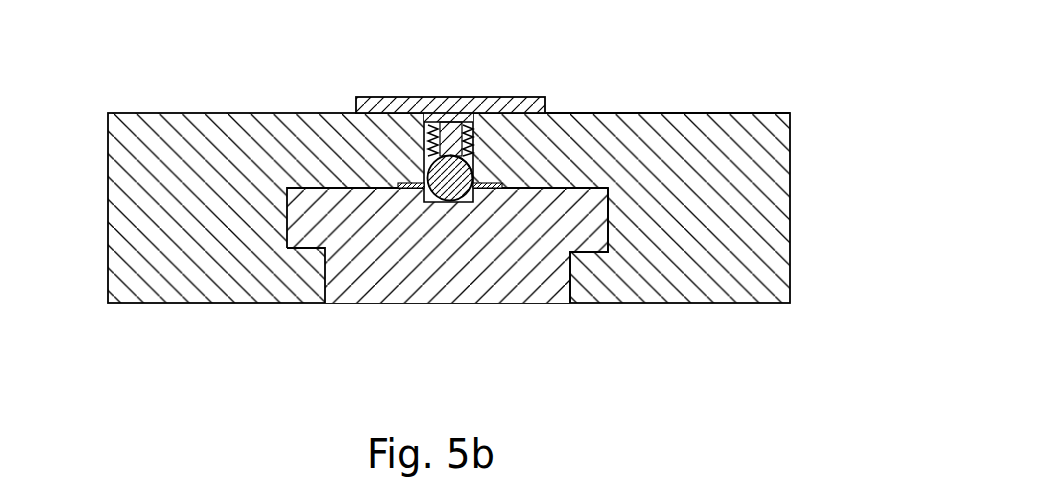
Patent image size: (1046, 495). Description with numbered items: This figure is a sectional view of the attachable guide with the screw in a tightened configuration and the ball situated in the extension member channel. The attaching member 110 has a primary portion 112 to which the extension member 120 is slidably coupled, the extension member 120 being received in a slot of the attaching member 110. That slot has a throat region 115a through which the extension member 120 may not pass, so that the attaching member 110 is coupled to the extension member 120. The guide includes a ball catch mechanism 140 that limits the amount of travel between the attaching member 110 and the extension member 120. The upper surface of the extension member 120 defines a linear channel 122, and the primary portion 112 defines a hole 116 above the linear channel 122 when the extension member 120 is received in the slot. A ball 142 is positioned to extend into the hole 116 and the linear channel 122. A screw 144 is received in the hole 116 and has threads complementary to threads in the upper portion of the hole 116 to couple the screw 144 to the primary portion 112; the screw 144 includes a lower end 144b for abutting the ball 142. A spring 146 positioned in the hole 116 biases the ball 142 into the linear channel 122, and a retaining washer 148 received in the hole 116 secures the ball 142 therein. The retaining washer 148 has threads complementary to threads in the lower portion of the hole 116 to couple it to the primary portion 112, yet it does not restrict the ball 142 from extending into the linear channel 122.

The attaching member 110 is at (792, 218).
The primary portion 112 is at (747, 113).
The throat region 115a is at (565, 263).
The hole 116 is at (473, 158).
The extension member 120 is at (379, 305).
The linear channel 122 is at (437, 203).
The ball catch mechanism 140 is at (482, 88).
The ball 142 is at (430, 200).
The screw 144 is at (540, 93).
The lower end 144b is at (448, 153).
The spring 146 is at (432, 142).
The retaining washer 148 is at (487, 189).